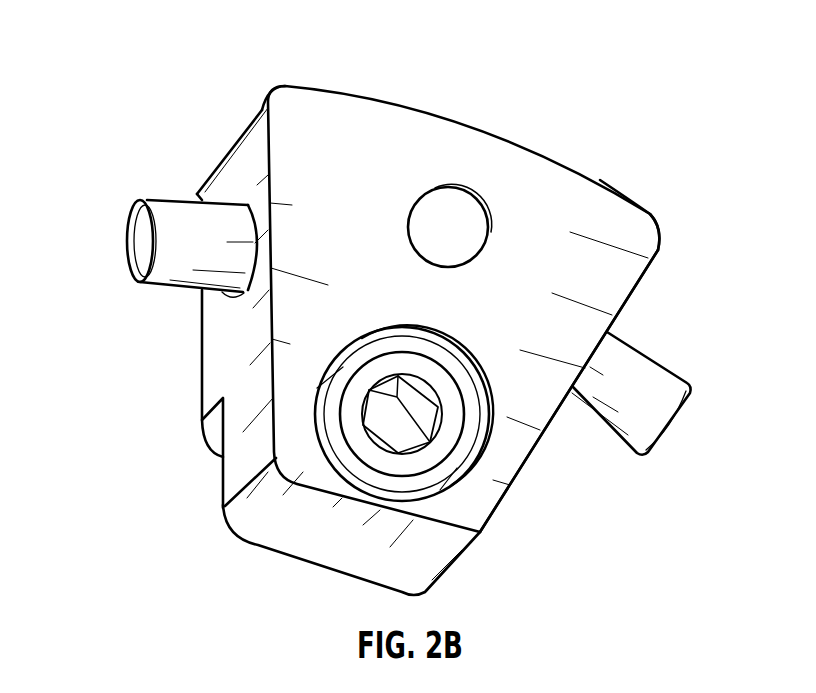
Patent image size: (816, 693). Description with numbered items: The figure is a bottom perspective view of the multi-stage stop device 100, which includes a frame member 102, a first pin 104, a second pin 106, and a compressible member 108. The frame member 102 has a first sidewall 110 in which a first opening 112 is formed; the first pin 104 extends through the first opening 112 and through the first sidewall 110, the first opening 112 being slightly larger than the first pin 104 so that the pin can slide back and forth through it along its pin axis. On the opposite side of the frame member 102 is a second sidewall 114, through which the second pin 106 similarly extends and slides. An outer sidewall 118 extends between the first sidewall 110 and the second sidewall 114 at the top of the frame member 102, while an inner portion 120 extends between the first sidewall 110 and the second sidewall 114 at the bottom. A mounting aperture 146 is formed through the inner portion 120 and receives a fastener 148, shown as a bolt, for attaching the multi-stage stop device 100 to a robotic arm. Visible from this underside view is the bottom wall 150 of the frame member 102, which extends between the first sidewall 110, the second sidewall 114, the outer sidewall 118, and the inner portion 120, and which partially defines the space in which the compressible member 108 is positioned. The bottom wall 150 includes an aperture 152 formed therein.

The multi-stage stop device 100 is at (127, 78).
The frame member 102 is at (390, 102).
The first pin 104 is at (150, 198).
The second pin 106 is at (650, 356).
The compressible member 108 is at (449, 222).
The first sidewall 110 is at (253, 160).
The first opening 112 is at (222, 294).
The second sidewall 114 is at (648, 268).
The outer sidewall 118 is at (620, 186).
The inner portion 120 is at (310, 537).
The mounting aperture 146 is at (445, 358).
The fastener 148 is at (447, 450).
The bottom wall 150 is at (305, 112).
The aperture 152 is at (455, 264).